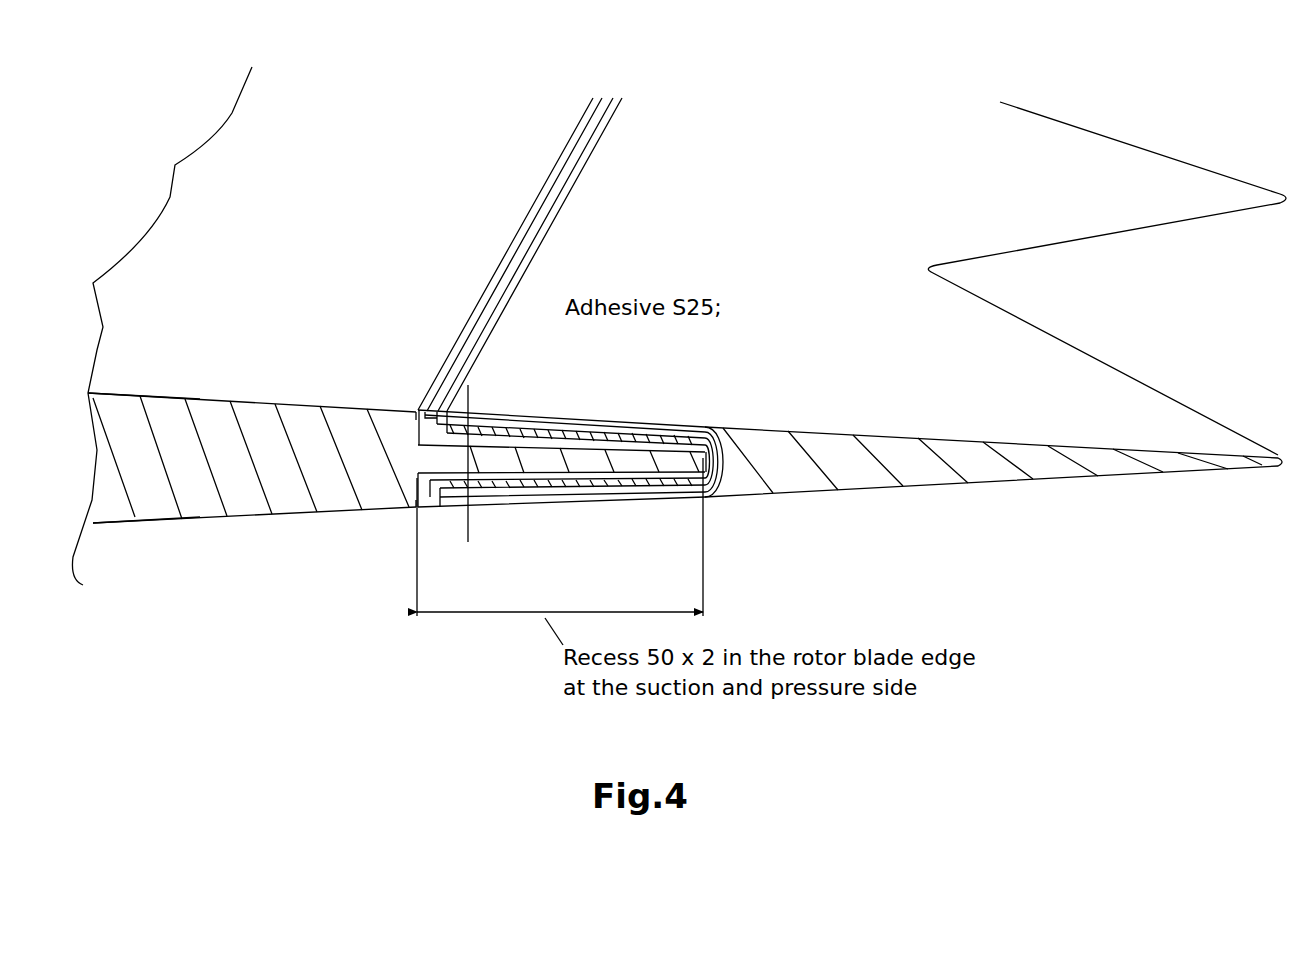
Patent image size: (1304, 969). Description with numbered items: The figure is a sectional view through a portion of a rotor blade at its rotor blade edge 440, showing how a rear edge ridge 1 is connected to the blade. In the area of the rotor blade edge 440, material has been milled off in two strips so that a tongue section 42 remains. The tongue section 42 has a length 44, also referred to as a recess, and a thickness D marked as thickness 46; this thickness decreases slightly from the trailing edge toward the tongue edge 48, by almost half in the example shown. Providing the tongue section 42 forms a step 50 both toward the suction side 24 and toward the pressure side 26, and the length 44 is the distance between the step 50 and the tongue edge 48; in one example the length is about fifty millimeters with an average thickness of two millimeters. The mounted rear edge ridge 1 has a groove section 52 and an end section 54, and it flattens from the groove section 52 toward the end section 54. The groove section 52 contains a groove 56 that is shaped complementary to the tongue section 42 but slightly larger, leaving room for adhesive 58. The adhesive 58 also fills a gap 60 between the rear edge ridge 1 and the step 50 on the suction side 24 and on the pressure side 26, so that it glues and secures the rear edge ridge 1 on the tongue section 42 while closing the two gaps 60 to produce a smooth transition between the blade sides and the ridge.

The rear edge ridge 1 is at (685, 368).
The suction side 24 is at (212, 328).
The pressure side 26 is at (210, 527).
The tongue section 42 is at (515, 486).
The length 44 is at (560, 537).
The thickness 46 is at (488, 464).
The tongue edge 48 is at (730, 488).
The step 50 is at (403, 425).
The groove section 52 is at (617, 408).
The end section 54 is at (1093, 107).
The groove 56 is at (588, 486).
The adhesive 58 is at (475, 328).
The gap 60 is at (533, 207).
The rotor blade edge 440 is at (330, 498).